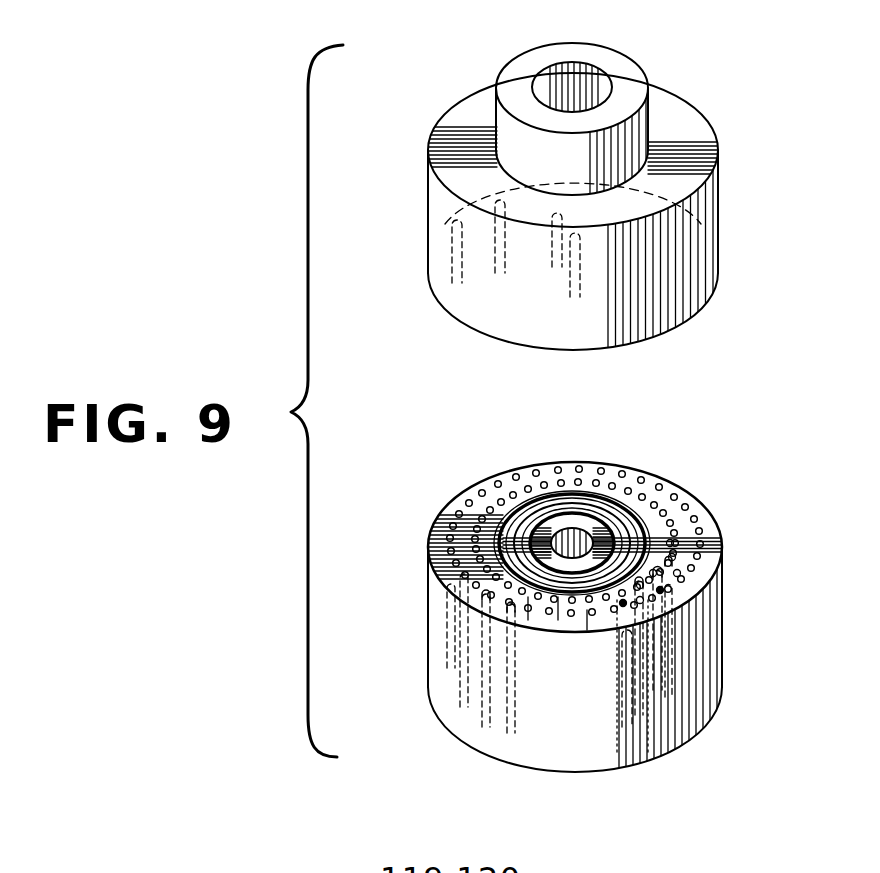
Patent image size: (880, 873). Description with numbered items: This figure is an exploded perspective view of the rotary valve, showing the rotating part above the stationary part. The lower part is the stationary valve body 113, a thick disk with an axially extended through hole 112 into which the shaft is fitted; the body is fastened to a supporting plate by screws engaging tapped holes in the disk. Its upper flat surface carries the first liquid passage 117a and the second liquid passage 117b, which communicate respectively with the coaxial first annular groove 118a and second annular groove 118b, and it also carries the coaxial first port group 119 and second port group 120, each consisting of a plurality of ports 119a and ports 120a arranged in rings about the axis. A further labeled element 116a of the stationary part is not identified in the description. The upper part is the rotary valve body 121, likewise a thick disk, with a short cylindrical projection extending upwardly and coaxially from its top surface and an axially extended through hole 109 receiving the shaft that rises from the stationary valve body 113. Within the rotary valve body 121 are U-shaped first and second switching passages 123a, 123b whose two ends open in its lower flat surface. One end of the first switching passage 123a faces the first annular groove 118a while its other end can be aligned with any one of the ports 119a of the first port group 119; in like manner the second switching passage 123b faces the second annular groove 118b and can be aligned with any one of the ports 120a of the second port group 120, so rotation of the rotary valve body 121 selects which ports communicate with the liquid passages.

The through hole 109 is at (602, 80).
The through hole 112 is at (607, 520).
The stationary valve body 113 is at (723, 587).
The top end face 116a is at (707, 520).
The first liquid passage 117a is at (587, 620).
The second liquid passage 117b is at (505, 530).
The first annular groove 118a is at (505, 505).
The second annular groove 118b is at (538, 497).
The first port group 119 is at (460, 542).
The ports 119a is at (667, 560).
The second port group 120 is at (663, 495).
The ports 120a is at (584, 466).
The rotary valve body 121 is at (713, 205).
The first switching passage 123a is at (555, 235).
The second switching passage 123b is at (453, 222).